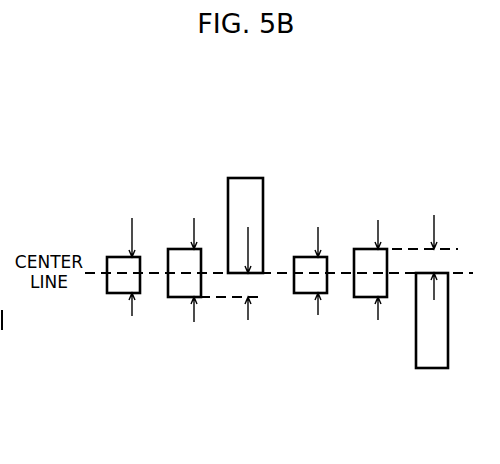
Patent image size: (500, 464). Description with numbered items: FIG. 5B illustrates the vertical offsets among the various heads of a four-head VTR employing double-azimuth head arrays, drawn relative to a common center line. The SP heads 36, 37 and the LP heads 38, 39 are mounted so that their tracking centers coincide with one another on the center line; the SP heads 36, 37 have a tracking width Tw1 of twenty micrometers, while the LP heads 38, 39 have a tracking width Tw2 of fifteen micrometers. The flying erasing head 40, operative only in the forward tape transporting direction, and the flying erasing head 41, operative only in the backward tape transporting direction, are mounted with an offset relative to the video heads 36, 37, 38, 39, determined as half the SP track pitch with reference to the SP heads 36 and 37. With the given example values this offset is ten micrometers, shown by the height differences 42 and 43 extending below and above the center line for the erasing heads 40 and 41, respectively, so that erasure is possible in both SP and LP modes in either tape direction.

The SP (+) head 36 is at (183, 249).
The SP (−) head 37 is at (363, 249).
The LP head 38 is at (117, 257).
The LP head 39 is at (305, 257).
The flying erasing head 40 is at (242, 178).
The flying erasing head 41 is at (426, 370).
The lower height offset ΔH1 42 is at (256, 287).
The upper height offset ΔH1 43 is at (433, 252).